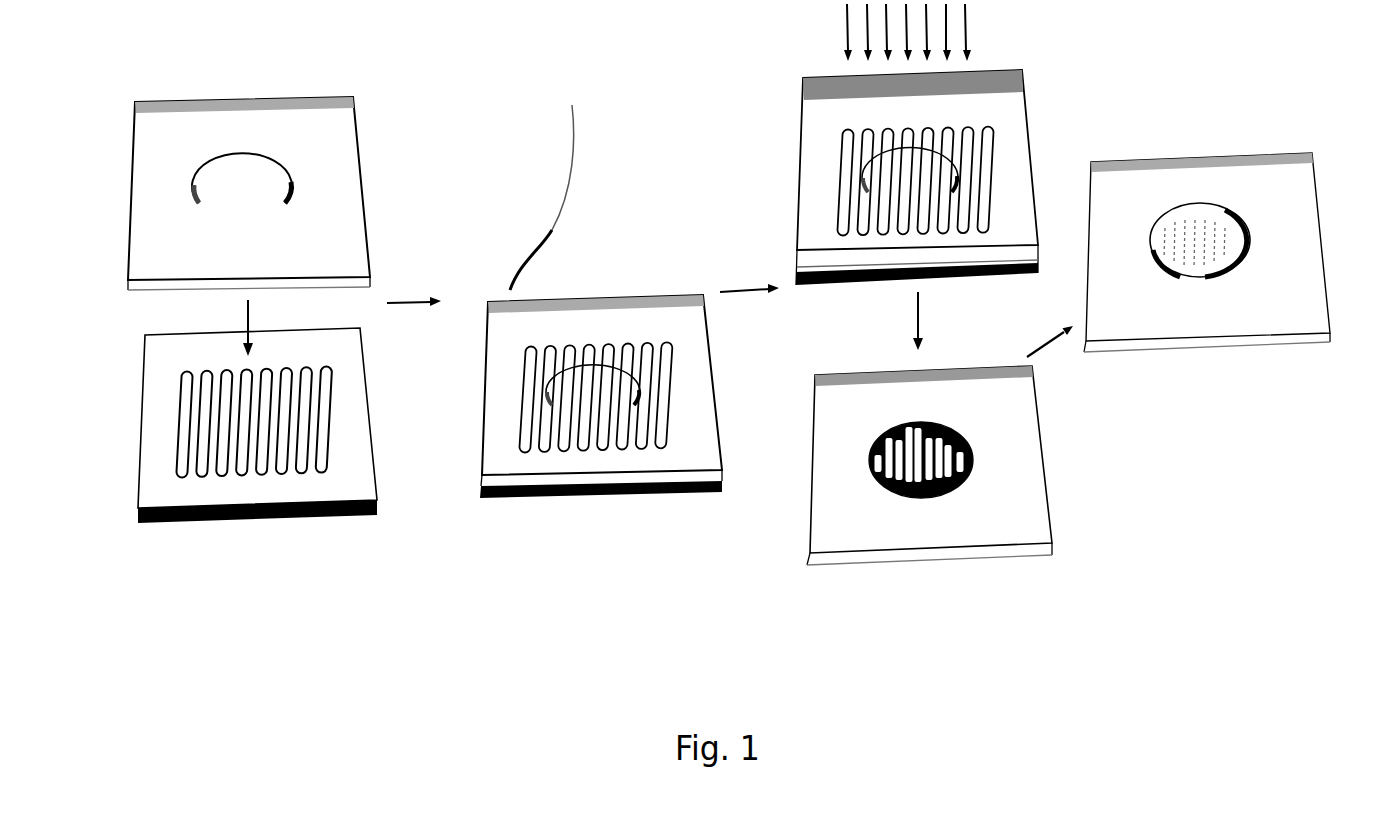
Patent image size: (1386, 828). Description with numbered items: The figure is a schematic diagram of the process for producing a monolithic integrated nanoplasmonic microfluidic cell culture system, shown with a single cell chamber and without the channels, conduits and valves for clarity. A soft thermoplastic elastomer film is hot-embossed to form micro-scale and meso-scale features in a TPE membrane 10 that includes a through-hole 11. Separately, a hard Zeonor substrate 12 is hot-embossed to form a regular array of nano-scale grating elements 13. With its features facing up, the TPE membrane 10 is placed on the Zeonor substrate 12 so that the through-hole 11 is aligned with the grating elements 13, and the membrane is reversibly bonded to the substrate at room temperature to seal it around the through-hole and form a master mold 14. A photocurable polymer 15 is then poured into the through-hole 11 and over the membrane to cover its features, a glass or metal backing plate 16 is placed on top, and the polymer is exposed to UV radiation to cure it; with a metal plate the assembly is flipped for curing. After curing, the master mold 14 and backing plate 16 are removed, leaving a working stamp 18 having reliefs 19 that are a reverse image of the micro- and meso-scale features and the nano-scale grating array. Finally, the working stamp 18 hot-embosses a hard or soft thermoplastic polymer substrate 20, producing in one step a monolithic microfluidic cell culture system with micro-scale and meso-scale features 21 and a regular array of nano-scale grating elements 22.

The TPE membrane 10 is at (153, 230).
The through-hole 11 is at (229, 177).
The Zeonor substrate 12 is at (262, 492).
The nano-scale grating elements 13 is at (178, 438).
The master mold 14 is at (590, 513).
The photocurable polymer 15 is at (575, 232).
The backing plate 16 is at (1010, 75).
The working stamp 18 is at (1007, 530).
The reliefs 19 is at (922, 457).
The thermoplastic polymer substrate 20 is at (1268, 315).
The micro-scale and meso-scale features 21 is at (1187, 210).
The regular array of nano-scale grating elements 22 is at (1222, 240).